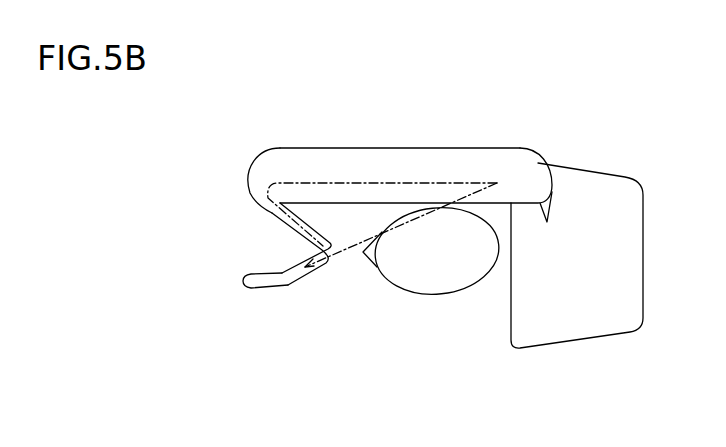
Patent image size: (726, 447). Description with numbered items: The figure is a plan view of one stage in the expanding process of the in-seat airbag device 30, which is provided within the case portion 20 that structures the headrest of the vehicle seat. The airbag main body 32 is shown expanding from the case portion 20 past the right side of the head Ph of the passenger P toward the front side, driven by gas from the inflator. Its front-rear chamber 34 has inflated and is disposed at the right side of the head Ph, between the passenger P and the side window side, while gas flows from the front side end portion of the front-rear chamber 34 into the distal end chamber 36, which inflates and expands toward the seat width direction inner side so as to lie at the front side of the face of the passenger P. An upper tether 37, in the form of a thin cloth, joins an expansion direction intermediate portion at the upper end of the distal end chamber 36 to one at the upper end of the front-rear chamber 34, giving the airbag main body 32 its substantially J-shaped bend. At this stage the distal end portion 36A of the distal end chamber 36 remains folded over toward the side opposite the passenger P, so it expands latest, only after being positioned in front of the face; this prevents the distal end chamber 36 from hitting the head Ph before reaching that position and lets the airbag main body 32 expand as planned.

The case portion 20 is at (621, 168).
The in-seat airbag device 30 is at (385, 200).
The airbag main body 32 is at (400, 132).
The front-rear chamber 34 is at (338, 147).
The distal end chamber 36 is at (278, 224).
The distal end portion 36A is at (257, 288).
The upper tether 37 is at (296, 182).
The passenger P is at (398, 288).
The head Ph is at (428, 272).